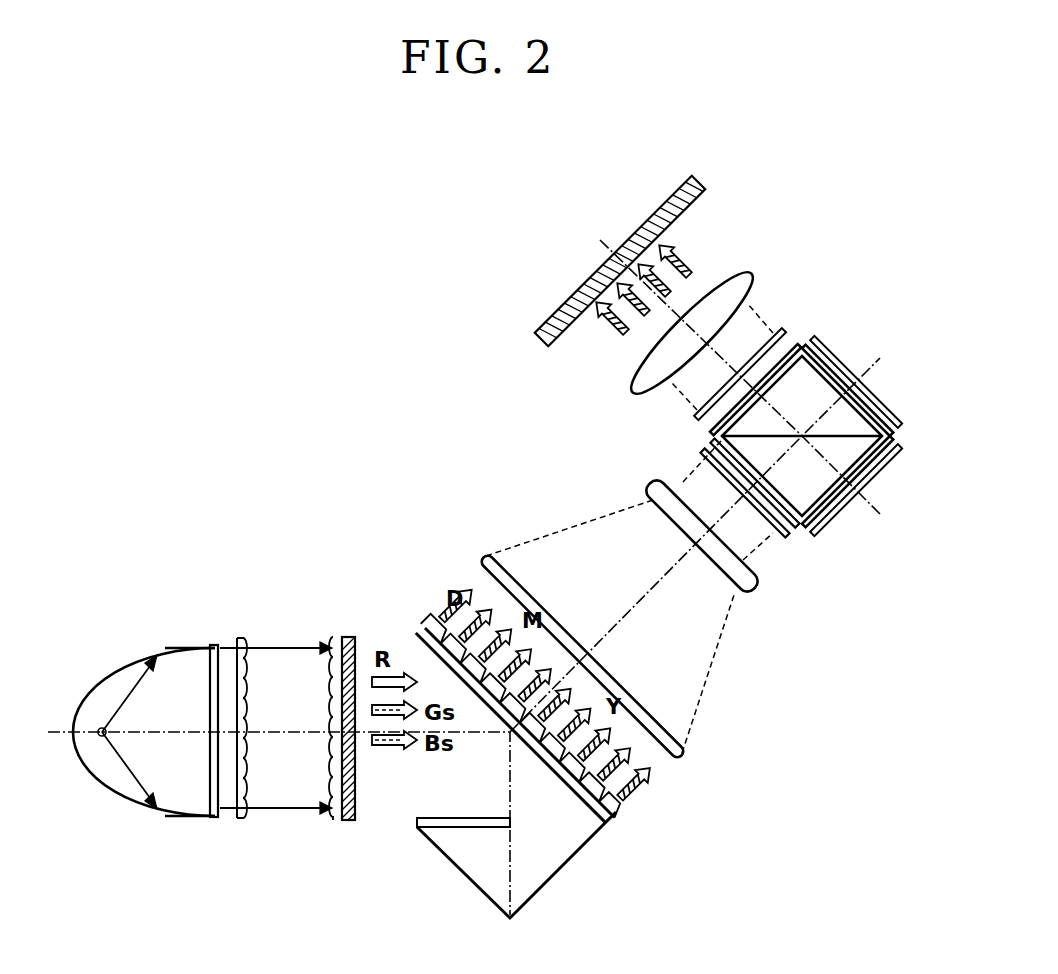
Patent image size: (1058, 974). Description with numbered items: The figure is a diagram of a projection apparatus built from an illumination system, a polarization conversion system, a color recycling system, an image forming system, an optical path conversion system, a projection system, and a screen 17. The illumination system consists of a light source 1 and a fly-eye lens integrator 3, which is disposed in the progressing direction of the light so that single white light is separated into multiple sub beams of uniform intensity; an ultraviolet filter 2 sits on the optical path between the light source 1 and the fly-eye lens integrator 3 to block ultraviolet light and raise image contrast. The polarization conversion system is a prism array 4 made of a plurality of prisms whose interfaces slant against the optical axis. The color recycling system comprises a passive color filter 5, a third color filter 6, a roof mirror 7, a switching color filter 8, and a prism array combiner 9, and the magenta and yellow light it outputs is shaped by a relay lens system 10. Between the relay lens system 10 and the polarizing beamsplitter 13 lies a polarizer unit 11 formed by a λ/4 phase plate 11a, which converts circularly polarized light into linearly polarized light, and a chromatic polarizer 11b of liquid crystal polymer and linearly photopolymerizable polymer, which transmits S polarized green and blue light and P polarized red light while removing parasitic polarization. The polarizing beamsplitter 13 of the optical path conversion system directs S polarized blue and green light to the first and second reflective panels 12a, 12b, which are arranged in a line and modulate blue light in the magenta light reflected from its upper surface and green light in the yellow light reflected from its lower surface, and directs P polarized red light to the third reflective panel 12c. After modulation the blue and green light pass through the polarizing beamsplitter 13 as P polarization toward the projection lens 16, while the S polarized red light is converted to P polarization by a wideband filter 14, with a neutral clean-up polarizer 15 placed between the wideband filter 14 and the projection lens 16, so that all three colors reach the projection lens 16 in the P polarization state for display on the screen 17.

The light source 1 is at (108, 792).
The ultraviolet filter 2 is at (205, 668).
The fly-eye lens integrator 3 is at (332, 813).
The prism array 4 is at (350, 822).
The passive color filter 5 is at (420, 634).
The third color filter 6 is at (420, 818).
The roof mirror 7 is at (536, 902).
The switching color filter 8 is at (427, 617).
The prism array combiner 9 is at (452, 598).
The relay lens system 10 is at (652, 498).
The polarizer unit 11 is at (605, 432).
The λ/4 phase plate 11a is at (702, 454).
The chromatic polarizer 11b is at (711, 450).
The first reflective panel 12a is at (826, 522).
The second reflective panel 12b is at (877, 480).
The third reflective panel 12c is at (884, 400).
The polarizing beamsplitter 13 is at (802, 500).
The wideband filter 14 is at (797, 345).
The neutral clean-up polarizer 15 is at (783, 330).
The projection lens 16 is at (746, 276).
The screen 17 is at (545, 320).